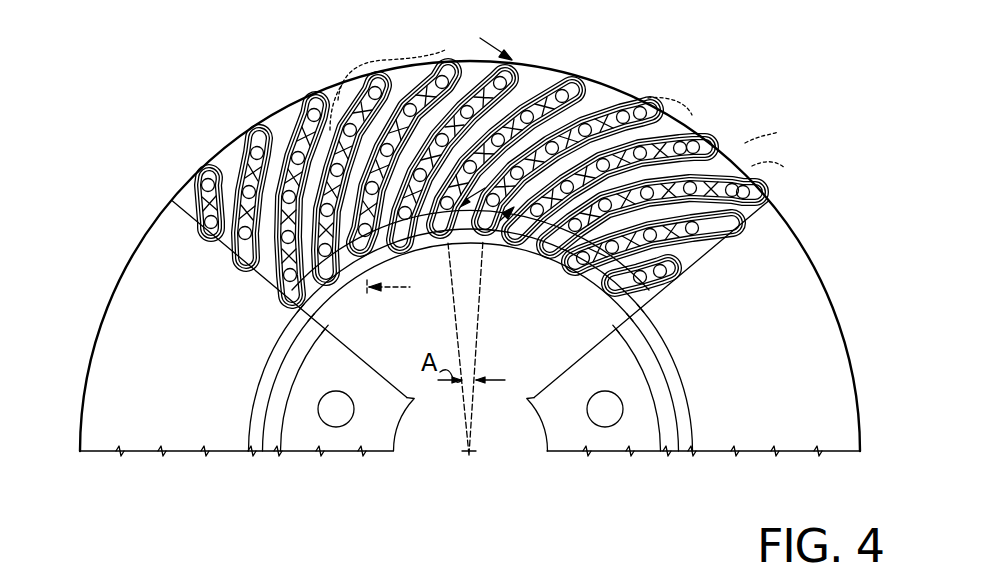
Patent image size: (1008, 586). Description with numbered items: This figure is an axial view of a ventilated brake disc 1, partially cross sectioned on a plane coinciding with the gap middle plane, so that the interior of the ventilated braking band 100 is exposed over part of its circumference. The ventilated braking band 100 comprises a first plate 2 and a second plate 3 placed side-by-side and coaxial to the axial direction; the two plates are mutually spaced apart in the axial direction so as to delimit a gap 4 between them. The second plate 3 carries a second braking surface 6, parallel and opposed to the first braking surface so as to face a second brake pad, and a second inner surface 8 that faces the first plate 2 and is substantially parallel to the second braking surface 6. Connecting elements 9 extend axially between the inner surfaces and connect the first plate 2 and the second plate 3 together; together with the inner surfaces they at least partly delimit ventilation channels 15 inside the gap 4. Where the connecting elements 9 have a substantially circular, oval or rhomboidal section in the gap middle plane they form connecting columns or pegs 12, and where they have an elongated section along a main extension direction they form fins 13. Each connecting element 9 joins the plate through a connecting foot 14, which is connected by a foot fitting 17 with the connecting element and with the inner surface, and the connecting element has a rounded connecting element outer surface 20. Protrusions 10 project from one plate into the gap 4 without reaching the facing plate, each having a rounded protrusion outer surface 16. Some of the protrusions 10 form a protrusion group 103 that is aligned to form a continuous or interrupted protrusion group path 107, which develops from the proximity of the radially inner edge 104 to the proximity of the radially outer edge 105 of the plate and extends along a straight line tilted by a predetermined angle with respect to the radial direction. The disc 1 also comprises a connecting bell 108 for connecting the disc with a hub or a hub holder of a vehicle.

The ventilated brake disc 1 is at (837, 365).
The first plate 2 is at (273, 122).
The second plate 3 is at (118, 367).
The gap 4 is at (536, 81).
The second braking surface 6 is at (174, 331).
The second inner surface 8 is at (645, 108).
The connecting elements 9 is at (520, 205).
The protrusions 10 is at (793, 173).
The connecting columns or pegs 12 is at (604, 95).
The fins 13 is at (412, 97).
The connecting foot 14 is at (680, 125).
The ventilation channels 15 is at (460, 217).
The rounded protrusion outer surface 16 is at (245, 168).
The foot fitting 17 is at (350, 102).
The rounded connecting element outer surface 20 is at (205, 197).
The ventilated braking band 100 is at (798, 291).
The protrusion group 103 is at (372, 73).
The radially inner edge 104 is at (585, 274).
The radially outer edge 105 is at (740, 150).
The second protrusion group path 107 is at (665, 118).
The connecting bell 108 is at (556, 412).